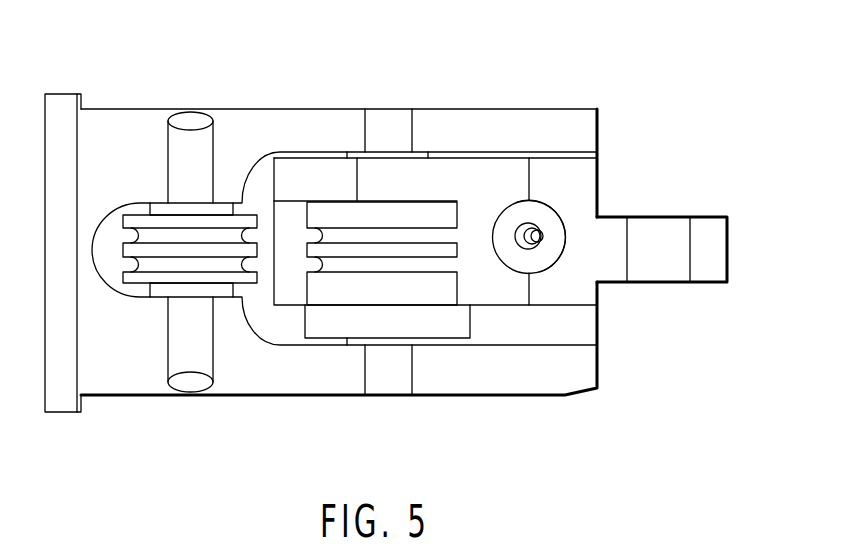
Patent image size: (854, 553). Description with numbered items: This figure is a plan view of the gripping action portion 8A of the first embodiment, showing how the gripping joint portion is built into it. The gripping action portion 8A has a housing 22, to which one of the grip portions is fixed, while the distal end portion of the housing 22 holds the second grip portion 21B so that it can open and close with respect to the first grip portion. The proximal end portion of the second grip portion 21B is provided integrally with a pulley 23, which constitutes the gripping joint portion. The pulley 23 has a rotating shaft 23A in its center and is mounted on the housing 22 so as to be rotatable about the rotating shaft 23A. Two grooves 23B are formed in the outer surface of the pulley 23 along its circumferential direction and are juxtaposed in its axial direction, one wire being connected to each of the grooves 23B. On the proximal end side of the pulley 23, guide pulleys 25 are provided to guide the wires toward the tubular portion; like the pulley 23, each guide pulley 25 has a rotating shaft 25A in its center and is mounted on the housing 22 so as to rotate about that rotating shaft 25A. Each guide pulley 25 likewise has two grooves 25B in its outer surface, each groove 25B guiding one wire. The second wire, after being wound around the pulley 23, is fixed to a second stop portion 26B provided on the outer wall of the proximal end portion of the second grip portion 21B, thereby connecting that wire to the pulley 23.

The gripping action portion 8A is at (462, 82).
The second grip portion 21B is at (712, 223).
The housing 22 is at (257, 377).
The pulley 23 is at (332, 213).
The rotating shaft 23A is at (387, 377).
The grooves 23B is at (408, 235).
The guide pulleys 25 is at (192, 213).
The rotating shaft 25A is at (187, 353).
The grooves 25B is at (174, 262).
The second stop portion 26B is at (533, 223).